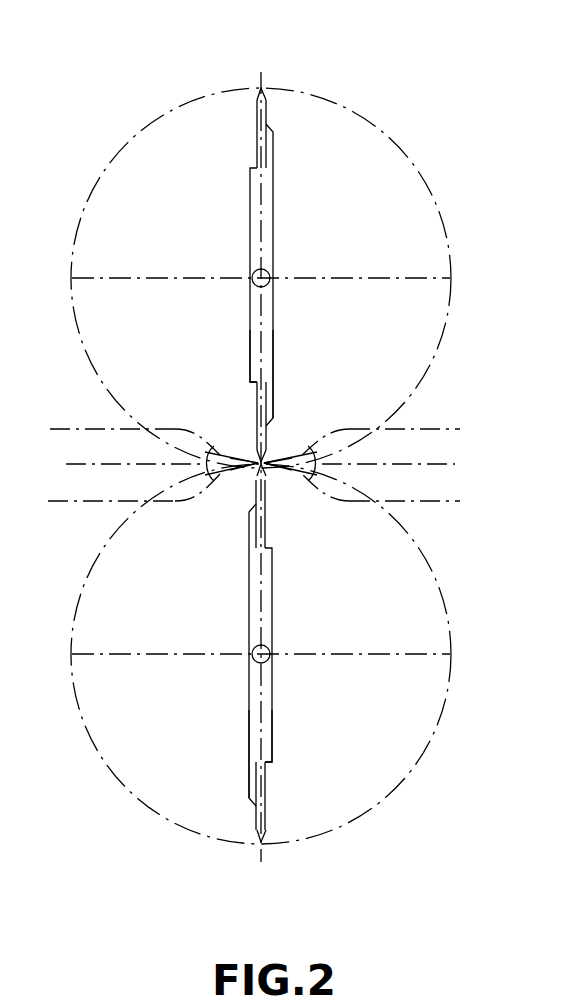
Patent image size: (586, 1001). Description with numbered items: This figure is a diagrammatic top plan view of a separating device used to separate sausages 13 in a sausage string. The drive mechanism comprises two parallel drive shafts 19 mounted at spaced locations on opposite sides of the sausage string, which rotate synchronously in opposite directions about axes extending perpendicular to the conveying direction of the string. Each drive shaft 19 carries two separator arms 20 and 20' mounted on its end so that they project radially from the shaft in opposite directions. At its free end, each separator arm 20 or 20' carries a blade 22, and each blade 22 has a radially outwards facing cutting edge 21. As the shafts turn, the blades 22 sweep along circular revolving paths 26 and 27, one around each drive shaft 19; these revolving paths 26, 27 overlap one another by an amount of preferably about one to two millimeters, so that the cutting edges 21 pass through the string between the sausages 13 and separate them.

The sausages 13 is at (65, 428).
The drive shaft 19 is at (269, 285).
The separator arm 20 is at (263, 465).
The separator arm 20' is at (271, 564).
The cutting edge 21 is at (265, 86).
The blade 22 is at (257, 140).
The revolving path 26 is at (427, 146).
The revolving path 27 is at (448, 622).